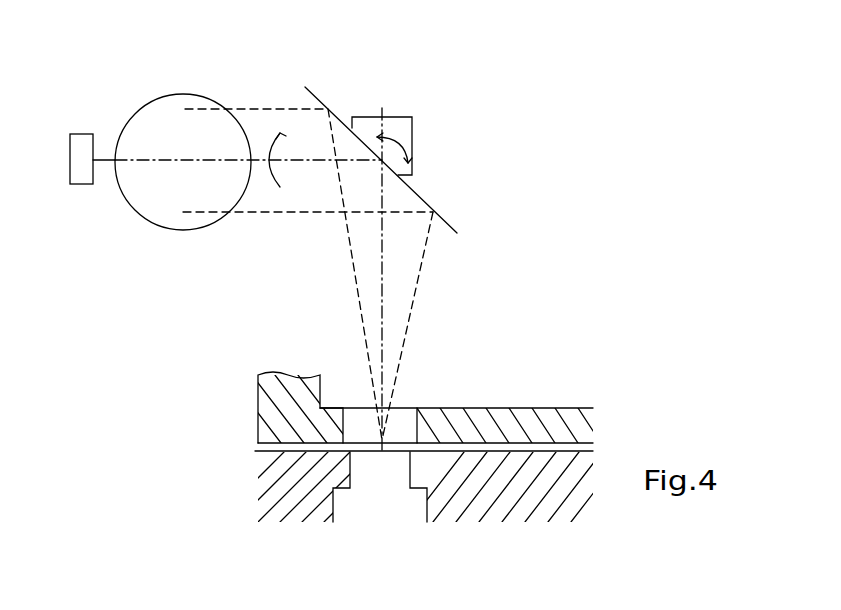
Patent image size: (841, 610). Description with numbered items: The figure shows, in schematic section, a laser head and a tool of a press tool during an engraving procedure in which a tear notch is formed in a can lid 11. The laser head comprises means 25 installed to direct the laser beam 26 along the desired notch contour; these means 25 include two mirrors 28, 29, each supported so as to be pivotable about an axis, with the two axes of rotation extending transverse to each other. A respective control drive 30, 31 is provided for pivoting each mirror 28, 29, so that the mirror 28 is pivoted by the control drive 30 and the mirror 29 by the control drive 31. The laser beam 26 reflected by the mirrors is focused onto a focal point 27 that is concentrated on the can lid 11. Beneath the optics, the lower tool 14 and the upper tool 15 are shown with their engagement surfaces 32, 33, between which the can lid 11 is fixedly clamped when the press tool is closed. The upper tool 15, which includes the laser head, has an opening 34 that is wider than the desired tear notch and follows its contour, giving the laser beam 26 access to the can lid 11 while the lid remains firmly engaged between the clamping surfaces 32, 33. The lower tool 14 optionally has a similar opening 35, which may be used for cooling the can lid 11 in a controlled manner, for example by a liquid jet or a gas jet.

The control drive 30 is at (83, 143).
The mirror 28 is at (200, 95).
The mirror 29 is at (322, 97).
The control drive 31 is at (410, 117).
The means for directing the laser beam 25 is at (462, 122).
The laser beam 26 is at (413, 305).
The focal point 27 is at (392, 438).
The upper tool 15 is at (273, 380).
The opening 34 is at (345, 402).
The engagement surface 32 is at (268, 441).
The engagement surface 33 is at (272, 452).
The lower tool 14 is at (268, 522).
The can lid 11 is at (398, 455).
The opening 35 is at (362, 498).